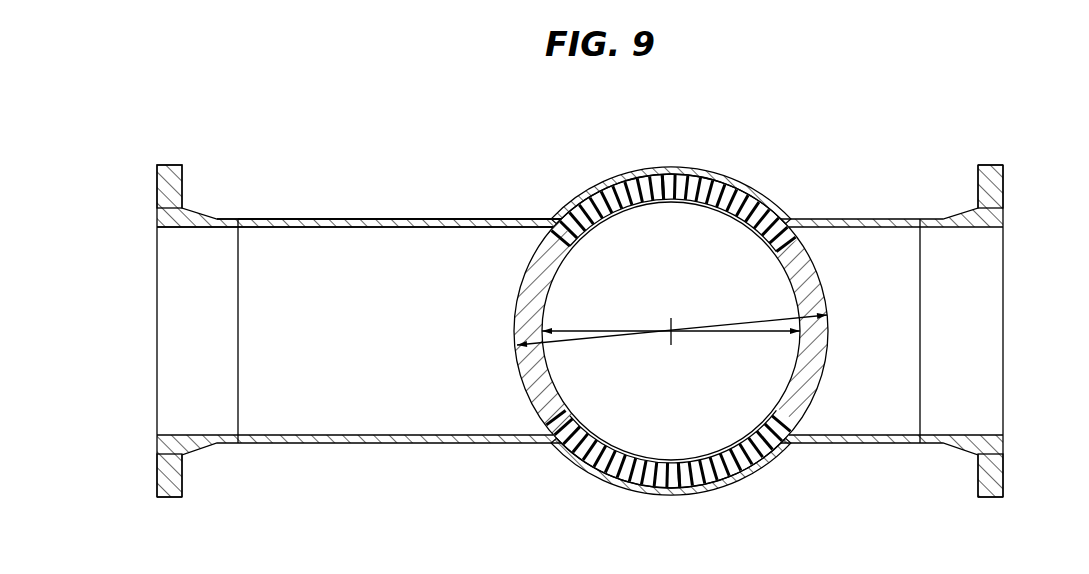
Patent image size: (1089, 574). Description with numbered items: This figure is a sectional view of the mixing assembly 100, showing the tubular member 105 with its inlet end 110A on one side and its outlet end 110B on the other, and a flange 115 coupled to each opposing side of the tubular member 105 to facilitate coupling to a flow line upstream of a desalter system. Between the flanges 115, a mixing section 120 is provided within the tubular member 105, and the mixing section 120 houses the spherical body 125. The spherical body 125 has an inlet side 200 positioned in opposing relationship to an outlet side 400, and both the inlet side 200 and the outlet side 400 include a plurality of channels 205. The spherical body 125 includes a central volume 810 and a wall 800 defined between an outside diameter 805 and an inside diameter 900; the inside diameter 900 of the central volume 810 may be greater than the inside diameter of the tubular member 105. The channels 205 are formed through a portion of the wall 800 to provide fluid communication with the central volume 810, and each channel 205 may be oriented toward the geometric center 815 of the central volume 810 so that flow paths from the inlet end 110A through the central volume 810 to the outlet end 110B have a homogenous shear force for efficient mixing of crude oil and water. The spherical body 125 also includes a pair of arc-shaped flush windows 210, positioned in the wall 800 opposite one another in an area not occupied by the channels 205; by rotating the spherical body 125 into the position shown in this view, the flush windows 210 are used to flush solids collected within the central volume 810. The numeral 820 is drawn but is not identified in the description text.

The mixing assembly 100 is at (840, 72).
The tubular member 105 is at (348, 158).
The inlet end 110A is at (357, 446).
The outlet end 110B is at (865, 440).
The flange 115 is at (155, 470).
The mixing section 120 is at (711, 150).
The spherical body 125 is at (538, 232).
The inlet side 200 is at (651, 160).
The channels 205 is at (664, 203).
The flush windows 210 is at (785, 243).
The outlet side 400 is at (713, 483).
The wall 800 is at (823, 303).
The outside diameter 805 is at (608, 340).
The central volume 810 is at (620, 413).
The geometric center 815 is at (673, 318).
The pipe wall 820 is at (396, 214).
The inside diameter 900 is at (625, 328).